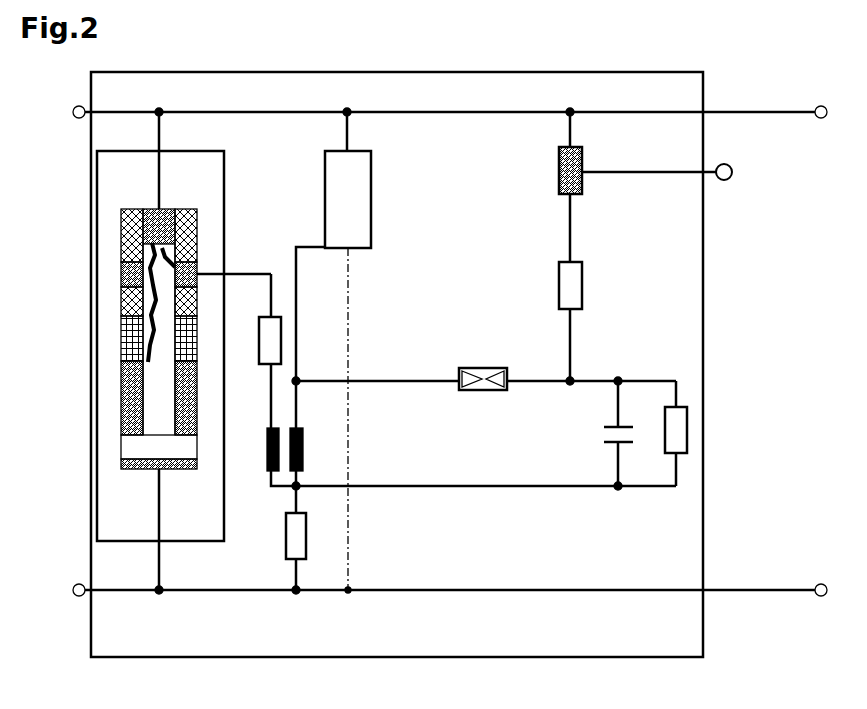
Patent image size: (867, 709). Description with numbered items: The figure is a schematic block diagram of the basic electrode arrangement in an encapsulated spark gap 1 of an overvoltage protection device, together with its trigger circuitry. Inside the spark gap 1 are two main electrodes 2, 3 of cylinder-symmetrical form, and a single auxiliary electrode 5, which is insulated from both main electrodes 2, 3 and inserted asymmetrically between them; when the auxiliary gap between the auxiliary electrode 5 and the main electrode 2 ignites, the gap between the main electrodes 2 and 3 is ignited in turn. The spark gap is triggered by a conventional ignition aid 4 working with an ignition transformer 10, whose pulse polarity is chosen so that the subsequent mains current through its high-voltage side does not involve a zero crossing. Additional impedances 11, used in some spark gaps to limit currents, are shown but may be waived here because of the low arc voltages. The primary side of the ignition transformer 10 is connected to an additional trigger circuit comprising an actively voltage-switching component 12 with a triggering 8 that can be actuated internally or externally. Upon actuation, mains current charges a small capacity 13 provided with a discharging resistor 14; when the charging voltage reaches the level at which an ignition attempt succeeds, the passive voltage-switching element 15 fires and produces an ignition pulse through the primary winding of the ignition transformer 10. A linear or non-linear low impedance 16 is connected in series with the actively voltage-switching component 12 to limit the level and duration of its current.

The encapsulated spark gap 1 is at (90, 213).
The main electrode 2 is at (165, 218).
The main electrode 3 is at (133, 437).
The ignition aid 4 is at (378, 209).
The auxiliary electrode 5 is at (200, 272).
The triggering 8 is at (732, 188).
The ignition transformer 10 is at (315, 457).
The additional impedances 11 is at (278, 540).
The actively voltage-switching component 12 is at (588, 192).
The capacity 13 is at (627, 452).
The discharging resistor 14 is at (687, 452).
The passive voltage-switching element 15 is at (468, 400).
The low impedance 16 is at (589, 287).